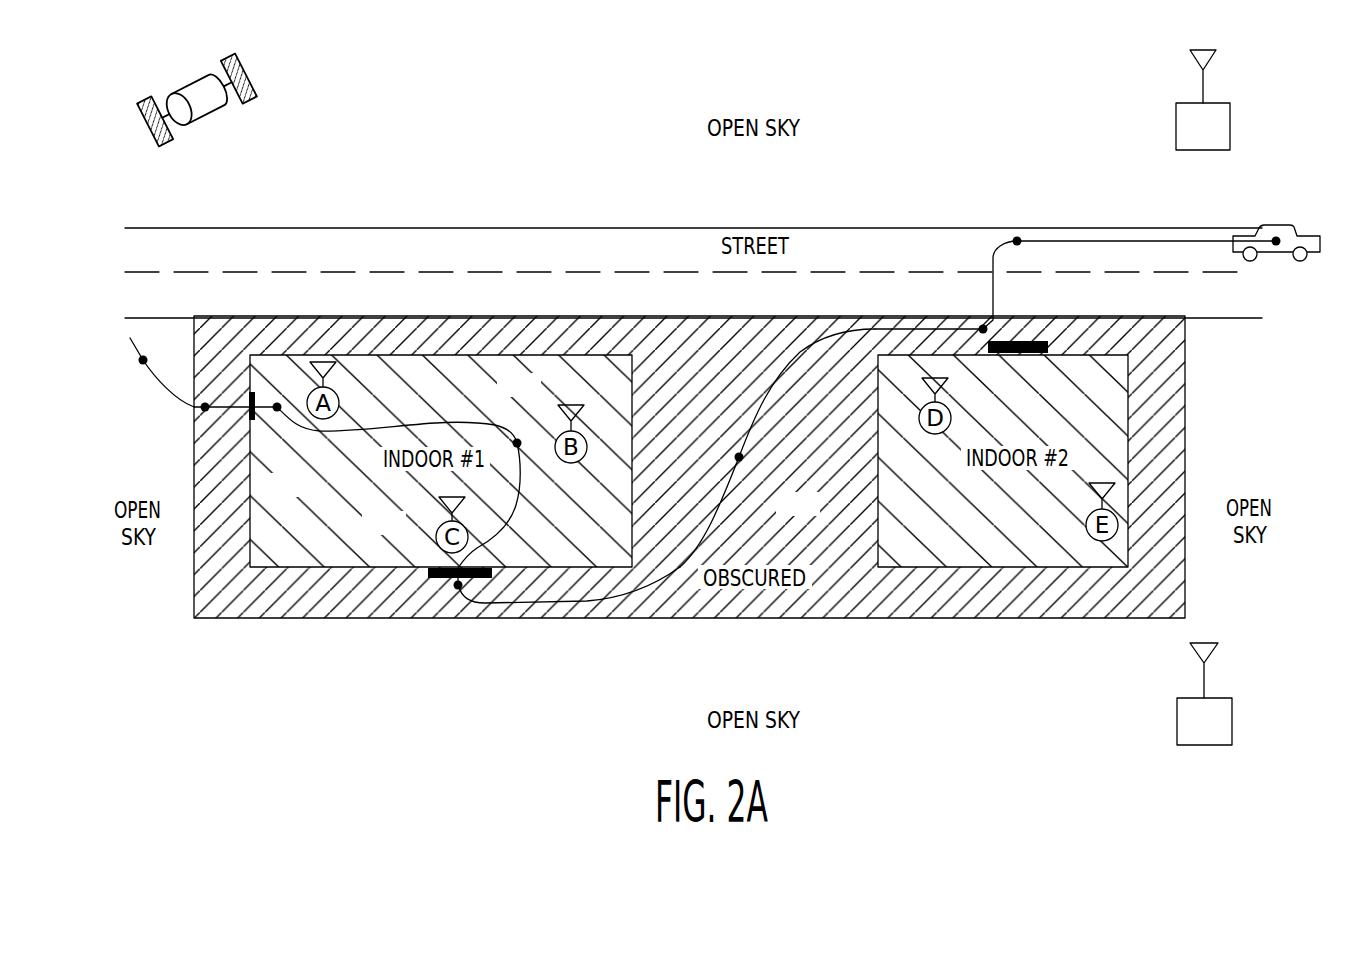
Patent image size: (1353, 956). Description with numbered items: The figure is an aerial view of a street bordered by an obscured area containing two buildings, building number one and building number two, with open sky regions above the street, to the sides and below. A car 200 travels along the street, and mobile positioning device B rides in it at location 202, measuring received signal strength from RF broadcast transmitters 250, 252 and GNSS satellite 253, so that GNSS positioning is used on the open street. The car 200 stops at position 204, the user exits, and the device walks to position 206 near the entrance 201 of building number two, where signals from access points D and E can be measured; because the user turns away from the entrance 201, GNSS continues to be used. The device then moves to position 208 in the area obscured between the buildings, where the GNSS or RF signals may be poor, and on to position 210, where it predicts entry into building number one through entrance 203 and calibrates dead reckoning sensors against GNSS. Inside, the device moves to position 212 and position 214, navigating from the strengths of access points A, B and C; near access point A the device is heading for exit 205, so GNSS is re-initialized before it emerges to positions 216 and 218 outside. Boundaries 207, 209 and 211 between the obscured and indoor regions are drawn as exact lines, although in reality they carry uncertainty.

The car 200 is at (1316, 253).
The entrance 201 is at (1045, 341).
The location 202 is at (1276, 241).
The entrance 203 is at (432, 568).
The position 204 is at (1017, 241).
The exit 205 is at (250, 392).
The position 206 is at (983, 329).
The boundary 207 is at (1065, 618).
The position 208 is at (739, 457).
The boundary 209 is at (1130, 390).
The position 210 is at (453, 588).
The boundary 211 is at (292, 567).
The position 212 is at (517, 443).
The position 214 is at (277, 407).
The position 216 is at (205, 407).
The position 218 is at (143, 360).
The RF broadcast transmitter 250 is at (1220, 140).
The RF broadcast transmitter 252 is at (1221, 735).
The GNSS satellite 253 is at (205, 118).